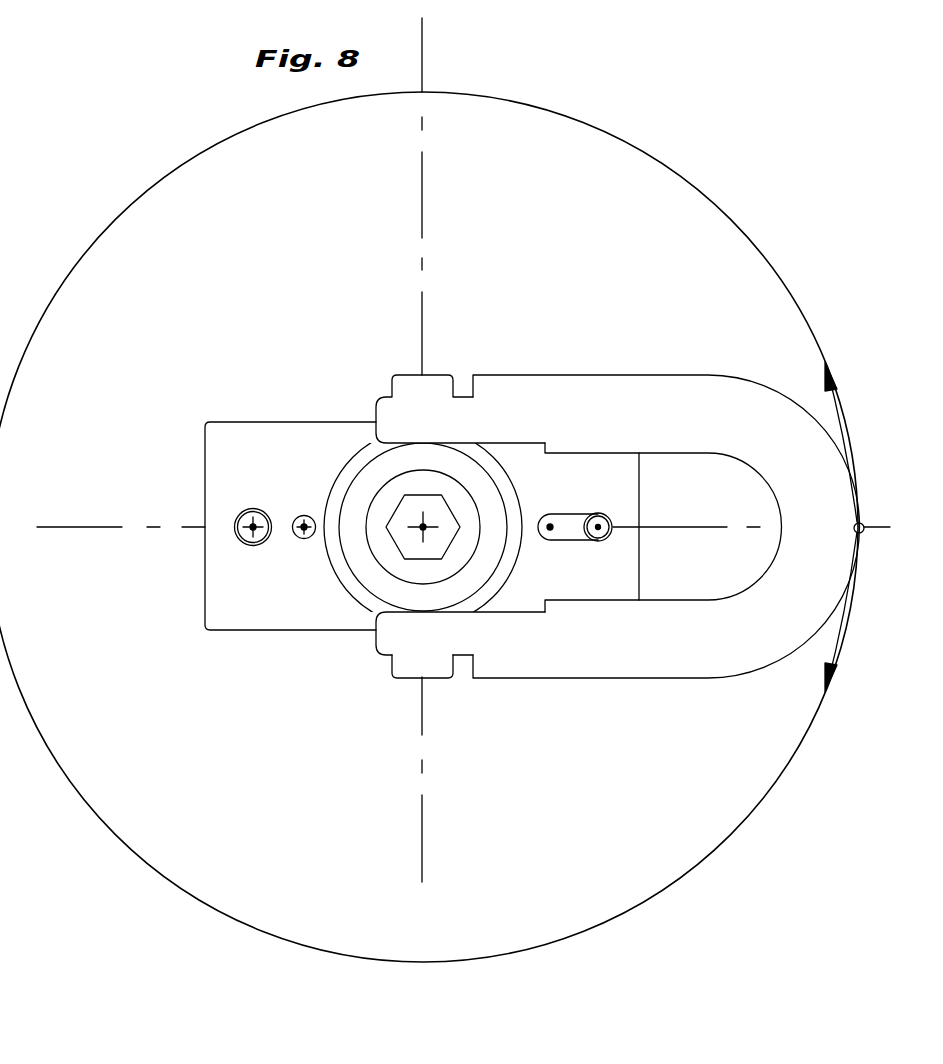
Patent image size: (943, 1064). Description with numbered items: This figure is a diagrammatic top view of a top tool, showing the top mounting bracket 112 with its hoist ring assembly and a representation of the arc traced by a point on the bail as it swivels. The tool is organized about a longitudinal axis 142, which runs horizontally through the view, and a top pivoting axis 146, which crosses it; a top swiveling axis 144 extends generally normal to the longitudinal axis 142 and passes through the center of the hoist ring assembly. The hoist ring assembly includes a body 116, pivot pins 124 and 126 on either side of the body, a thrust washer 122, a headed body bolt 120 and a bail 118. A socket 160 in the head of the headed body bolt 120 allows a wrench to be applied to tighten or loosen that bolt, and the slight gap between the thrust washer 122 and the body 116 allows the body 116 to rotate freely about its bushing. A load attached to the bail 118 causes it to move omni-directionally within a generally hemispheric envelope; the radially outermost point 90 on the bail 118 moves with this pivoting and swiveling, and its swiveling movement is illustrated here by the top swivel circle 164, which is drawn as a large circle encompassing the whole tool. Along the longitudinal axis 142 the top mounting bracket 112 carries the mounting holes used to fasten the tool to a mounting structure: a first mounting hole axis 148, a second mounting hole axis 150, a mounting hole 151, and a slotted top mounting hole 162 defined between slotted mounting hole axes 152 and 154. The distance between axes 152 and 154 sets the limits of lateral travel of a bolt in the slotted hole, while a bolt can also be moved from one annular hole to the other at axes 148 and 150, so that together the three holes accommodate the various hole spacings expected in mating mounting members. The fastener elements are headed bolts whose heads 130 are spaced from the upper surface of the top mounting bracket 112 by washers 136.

The radially outermost point 90 is at (858, 522).
The top mounting bracket 112 is at (258, 631).
The body 116 is at (337, 573).
The bail 118 is at (656, 375).
The headed body bolt 120 is at (382, 483).
The thrust washer 122 is at (385, 600).
The pivot pin 124 is at (433, 678).
The pivot pin 126 is at (408, 375).
The head 130 is at (243, 541).
The washer 136 is at (252, 546).
The longitudinal axis 142 is at (103, 526).
The top swiveling axis 144 is at (424, 524).
The top pivoting axis 146 is at (423, 208).
The first mounting hole axis 148 is at (241, 512).
The second mounting hole axis 150 is at (297, 515).
The mounting hole 151 is at (308, 516).
The slotted mounting hole axis 152 is at (603, 547).
The slotted mounting hole axis 154 is at (548, 545).
The socket 160 is at (440, 518).
The slotted top mounting hole 162 is at (572, 538).
The top swivel circle 164 is at (645, 153).